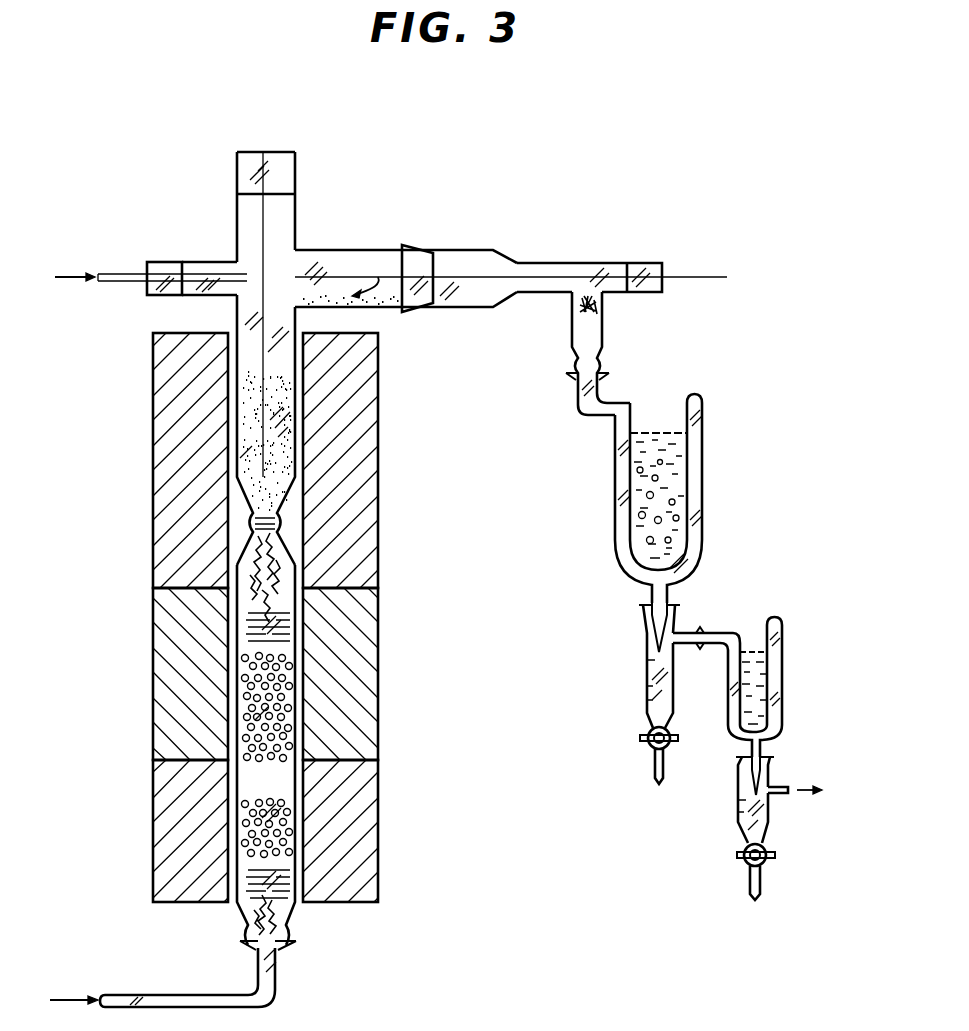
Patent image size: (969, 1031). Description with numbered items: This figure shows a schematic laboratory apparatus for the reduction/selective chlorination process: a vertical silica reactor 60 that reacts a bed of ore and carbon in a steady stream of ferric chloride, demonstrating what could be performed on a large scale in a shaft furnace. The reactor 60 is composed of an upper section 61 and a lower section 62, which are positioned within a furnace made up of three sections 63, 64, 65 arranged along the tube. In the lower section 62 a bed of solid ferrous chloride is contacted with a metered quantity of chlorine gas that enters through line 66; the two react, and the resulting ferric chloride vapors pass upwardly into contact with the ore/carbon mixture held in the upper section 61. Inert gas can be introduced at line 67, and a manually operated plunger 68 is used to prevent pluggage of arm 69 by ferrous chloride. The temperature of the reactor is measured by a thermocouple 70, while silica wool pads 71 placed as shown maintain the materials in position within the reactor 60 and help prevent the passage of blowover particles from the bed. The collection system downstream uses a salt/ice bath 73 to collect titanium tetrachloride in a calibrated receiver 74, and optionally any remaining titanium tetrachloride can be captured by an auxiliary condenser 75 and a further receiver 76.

The reactor 60 is at (264, 337).
The upper section 61 is at (296, 327).
The lower section 62 is at (297, 676).
The furnace section 63 is at (202, 447).
The furnace section 64 is at (208, 708).
The furnace section 65 is at (204, 834).
The line 66 is at (208, 995).
The line 67 is at (110, 283).
The manually operated plunger 68 is at (690, 277).
The arm 69 is at (306, 249).
The thermocouple 70 is at (263, 117).
The silica wool pad 71 is at (600, 308).
The salt/ice bath 73 is at (702, 475).
The calibrated receiver 74 is at (646, 716).
The auxiliary condenser 75 is at (782, 670).
The receiver 76 is at (770, 822).